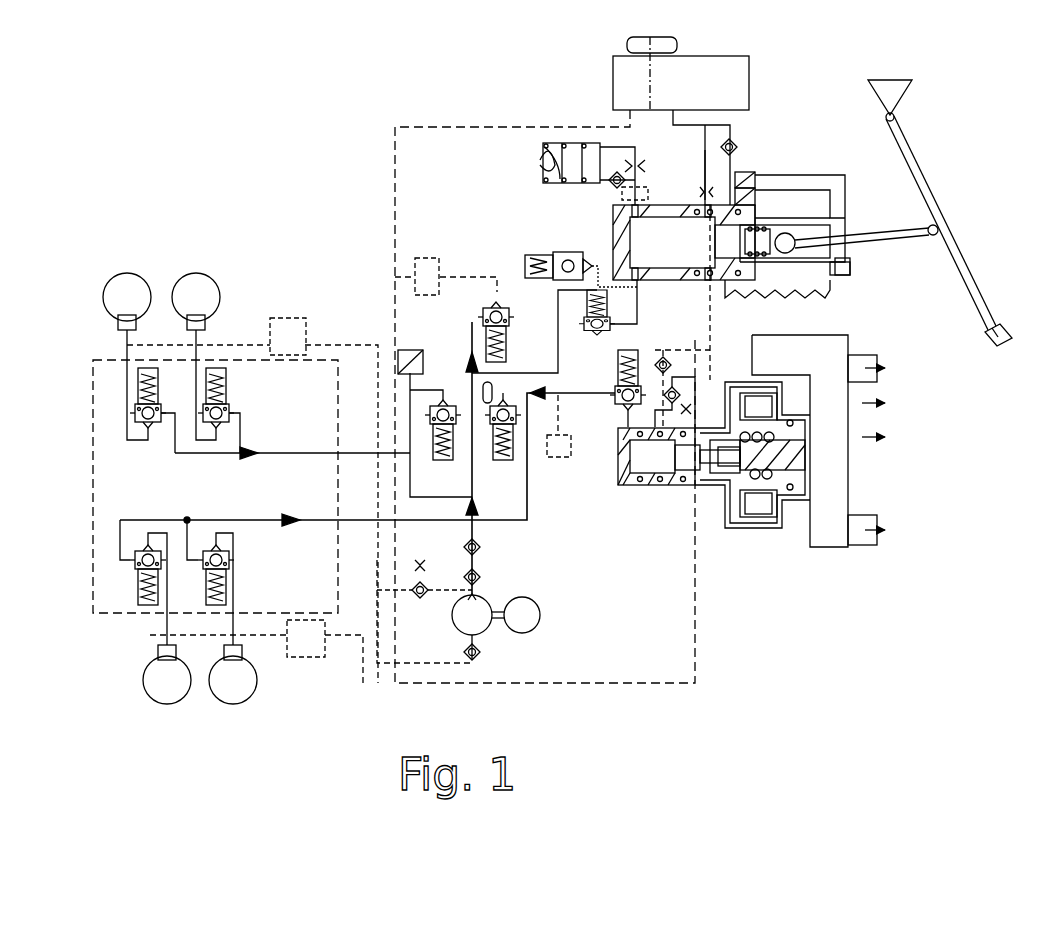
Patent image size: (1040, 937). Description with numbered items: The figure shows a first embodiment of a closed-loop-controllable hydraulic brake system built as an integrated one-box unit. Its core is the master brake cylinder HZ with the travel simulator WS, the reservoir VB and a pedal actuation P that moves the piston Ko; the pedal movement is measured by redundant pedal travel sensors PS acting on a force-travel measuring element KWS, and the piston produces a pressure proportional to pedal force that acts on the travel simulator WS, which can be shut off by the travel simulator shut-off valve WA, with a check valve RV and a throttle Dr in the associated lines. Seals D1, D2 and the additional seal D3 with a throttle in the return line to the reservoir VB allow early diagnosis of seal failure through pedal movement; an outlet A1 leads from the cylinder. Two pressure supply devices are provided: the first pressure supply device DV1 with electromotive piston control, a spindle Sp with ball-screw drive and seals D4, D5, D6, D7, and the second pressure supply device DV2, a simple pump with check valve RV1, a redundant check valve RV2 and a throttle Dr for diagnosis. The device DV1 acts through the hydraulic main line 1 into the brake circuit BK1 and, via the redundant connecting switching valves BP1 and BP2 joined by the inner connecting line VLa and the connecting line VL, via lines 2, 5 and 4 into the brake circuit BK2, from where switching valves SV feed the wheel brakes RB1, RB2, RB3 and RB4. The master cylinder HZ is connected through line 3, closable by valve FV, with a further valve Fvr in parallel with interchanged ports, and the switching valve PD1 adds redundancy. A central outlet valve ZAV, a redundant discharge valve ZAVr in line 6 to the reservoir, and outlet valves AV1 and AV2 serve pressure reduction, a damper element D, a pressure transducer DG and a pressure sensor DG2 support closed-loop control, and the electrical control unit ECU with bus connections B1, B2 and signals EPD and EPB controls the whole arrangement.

The travel simulator WS is at (548, 133).
The reservoir VB is at (750, 80).
The check valve RV is at (612, 188).
The travel simulator shut-off valve WA is at (700, 190).
The throttle Dr is at (540, 165).
The pedal travel sensors PS is at (760, 175).
The force-travel measuring element KWS is at (790, 238).
The pedal actuation P is at (950, 200).
The redundant discharge valve ZAVr is at (428, 258).
The hydraulic line 6 is at (462, 277).
The switching valve Fvr is at (566, 257).
The outlet A1 is at (640, 250).
The seal D3 is at (696, 268).
The piston Ko is at (840, 275).
The central outlet valve ZAV is at (486, 298).
The wheel brake RB3 is at (130, 300).
The wheel brake RB4 is at (198, 287).
The outlet valve AV2 is at (282, 318).
The pressure transducer DG is at (395, 352).
The hydraulic connecting line VL is at (439, 388).
The damper element D is at (493, 388).
The switching valve PD1 is at (612, 345).
The hydraulic line 3 is at (643, 292).
The seal D2 is at (710, 280).
The seal D1 is at (745, 280).
The master cylinder HZ is at (790, 280).
The electrical control unit ECU is at (800, 441).
The valve FV is at (612, 360).
The hydraulic main line 1 is at (575, 395).
The pressure sensor DG2 is at (583, 448).
The bus connection B1 is at (885, 368).
The electric pedal signal EPD is at (898, 403).
The electromotive parking brake EPB is at (897, 437).
The spindle Sp is at (800, 452).
The switching valve SV is at (177, 483).
The brake circuit BK2 is at (178, 453).
The hydraulic line 5 is at (232, 453).
The hydraulic line 4 is at (296, 520).
The connecting switching valve BP2 is at (440, 460).
The inner connecting line VLa is at (478, 420).
The connecting switching valve BP1 is at (515, 443).
The brake circuit BK1 is at (530, 520).
The check valve RV2 is at (445, 541).
The hydraulic line 2 is at (478, 540).
The check valve RV1 is at (480, 578).
The seal D7 is at (635, 485).
The seal D6 is at (680, 485).
The seal D5 is at (692, 485).
The seal D4 is at (705, 485).
The pressure supply device DV1 is at (770, 528).
The bus connection B2 is at (885, 530).
The pressure supply device DV2 is at (512, 652).
The outlet valve AV1 is at (310, 657).
The wheel brake RB1 is at (165, 690).
The wheel brake RB2 is at (238, 695).